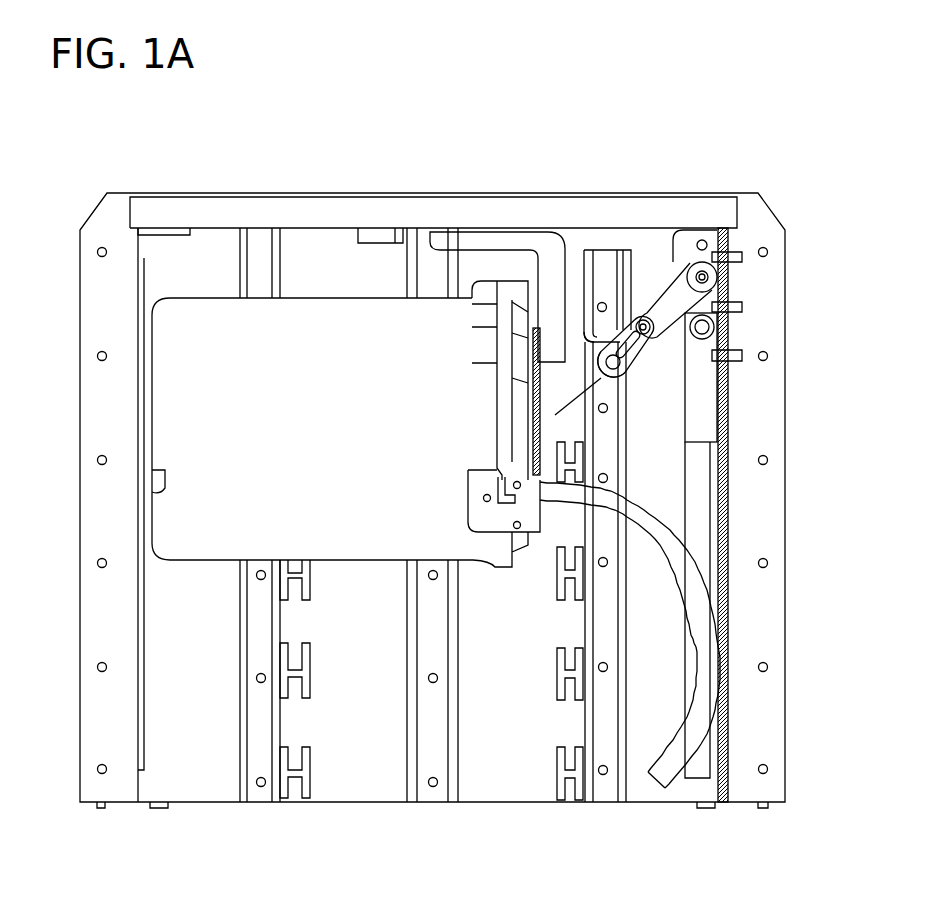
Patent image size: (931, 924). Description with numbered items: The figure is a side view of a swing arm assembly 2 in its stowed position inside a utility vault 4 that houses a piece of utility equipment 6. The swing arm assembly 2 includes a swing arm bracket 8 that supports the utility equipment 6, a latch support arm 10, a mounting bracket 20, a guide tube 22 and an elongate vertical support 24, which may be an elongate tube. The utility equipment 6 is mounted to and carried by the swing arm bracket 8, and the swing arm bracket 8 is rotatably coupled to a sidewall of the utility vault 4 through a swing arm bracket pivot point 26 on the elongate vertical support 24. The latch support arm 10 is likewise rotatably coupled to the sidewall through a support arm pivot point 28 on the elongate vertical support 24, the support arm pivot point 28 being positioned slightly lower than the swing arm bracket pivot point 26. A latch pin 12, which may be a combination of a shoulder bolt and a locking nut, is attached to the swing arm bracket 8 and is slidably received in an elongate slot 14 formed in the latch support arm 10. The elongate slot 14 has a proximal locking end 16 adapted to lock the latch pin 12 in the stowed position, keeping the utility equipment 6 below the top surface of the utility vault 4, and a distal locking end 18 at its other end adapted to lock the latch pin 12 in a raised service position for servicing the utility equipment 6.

The swing arm assembly 2 is at (440, 207).
The utility vault 4 is at (80, 385).
The utility equipment 6 is at (332, 450).
The swing arm bracket 8 is at (614, 246).
The latch support arm 10 is at (627, 379).
The latch pin 12 is at (645, 321).
The elongate slot 14 is at (637, 352).
The proximal locking end 16 is at (660, 323).
The distal locking end 18 is at (603, 337).
The mounting bracket 20 is at (712, 376).
The guide tube 22 is at (685, 410).
The elongate vertical support 24 is at (685, 470).
The swing arm bracket pivot point 26 is at (703, 237).
The support arm pivot point 28 is at (710, 278).